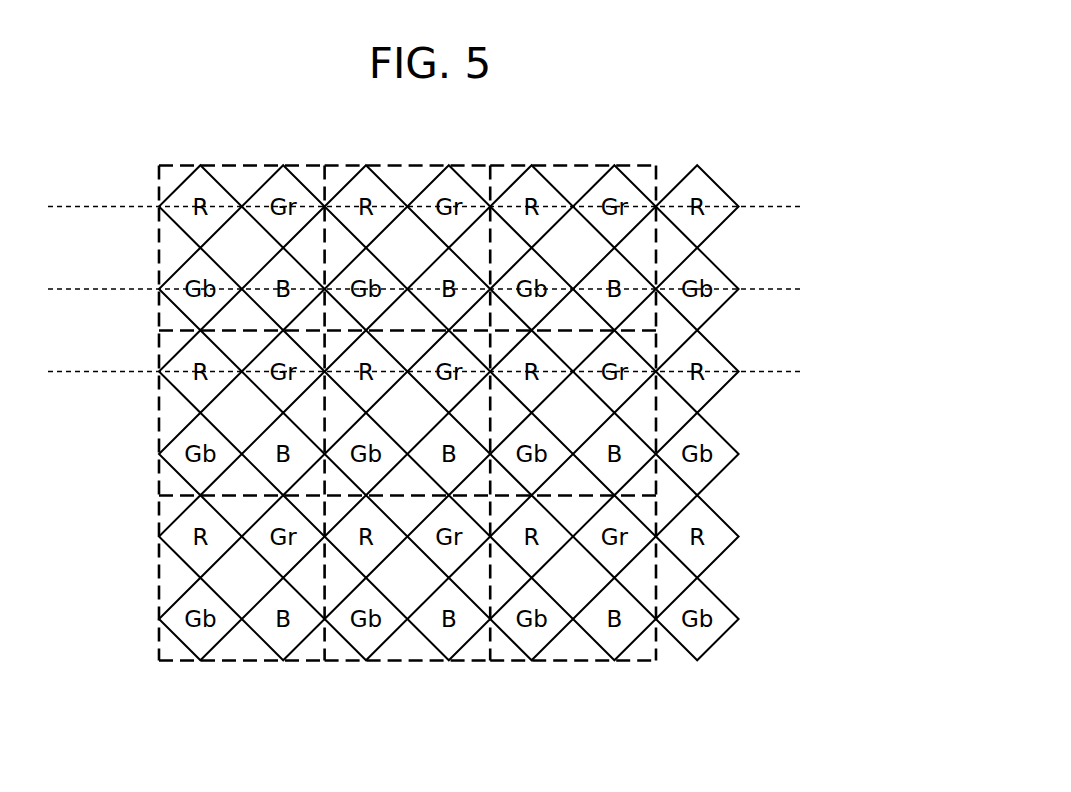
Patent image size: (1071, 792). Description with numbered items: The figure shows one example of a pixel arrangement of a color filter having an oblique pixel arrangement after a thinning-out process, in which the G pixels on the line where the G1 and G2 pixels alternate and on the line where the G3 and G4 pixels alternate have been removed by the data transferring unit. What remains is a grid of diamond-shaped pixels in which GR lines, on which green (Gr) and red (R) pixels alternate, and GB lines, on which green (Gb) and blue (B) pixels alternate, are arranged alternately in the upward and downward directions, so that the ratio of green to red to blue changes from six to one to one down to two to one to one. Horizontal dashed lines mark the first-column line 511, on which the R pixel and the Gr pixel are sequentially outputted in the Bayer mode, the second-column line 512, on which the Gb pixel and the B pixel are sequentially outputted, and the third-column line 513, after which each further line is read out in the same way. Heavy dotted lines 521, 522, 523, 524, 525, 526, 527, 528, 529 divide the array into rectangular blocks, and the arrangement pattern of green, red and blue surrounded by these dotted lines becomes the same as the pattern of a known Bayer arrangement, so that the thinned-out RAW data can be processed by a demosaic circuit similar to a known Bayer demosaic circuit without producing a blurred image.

The line 511 is at (78, 206).
The line 512 is at (78, 289).
The line 513 is at (78, 372).
The dotted line 521 is at (241, 162).
The dotted line 522 is at (389, 162).
The dotted line 523 is at (557, 162).
The dotted line 524 is at (157, 423).
The dotted line 525 is at (327, 413).
The dotted line 526 is at (659, 417).
The dotted line 527 is at (238, 663).
The dotted line 528 is at (407, 663).
The dotted line 529 is at (577, 663).